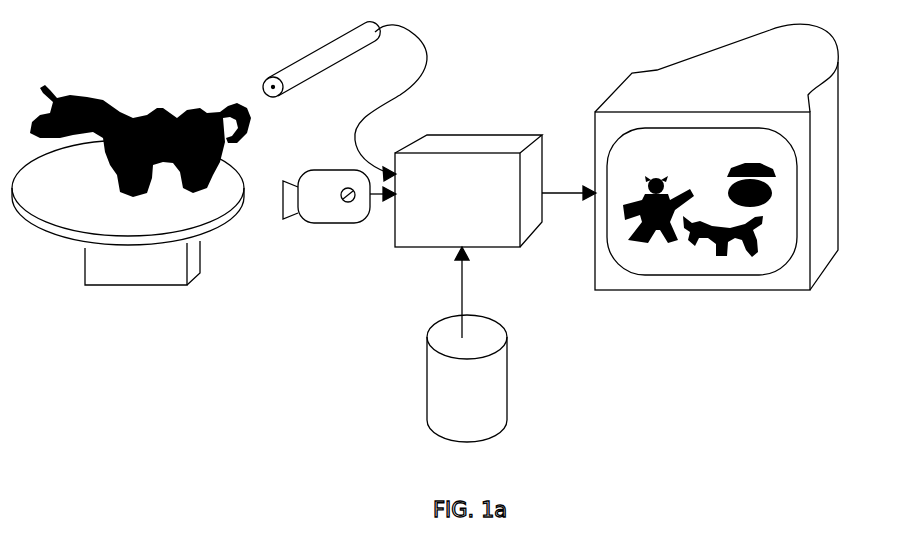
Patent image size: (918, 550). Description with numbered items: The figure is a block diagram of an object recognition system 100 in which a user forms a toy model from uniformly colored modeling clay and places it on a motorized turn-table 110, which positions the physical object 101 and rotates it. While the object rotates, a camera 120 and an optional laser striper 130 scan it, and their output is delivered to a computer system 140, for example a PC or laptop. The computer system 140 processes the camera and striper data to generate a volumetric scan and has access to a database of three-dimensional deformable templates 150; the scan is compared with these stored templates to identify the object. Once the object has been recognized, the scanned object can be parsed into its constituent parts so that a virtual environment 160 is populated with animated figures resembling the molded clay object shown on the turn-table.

The object recognition system 100 is at (358, 433).
The physical object 101 is at (146, 104).
The motorized turn-table 110 is at (62, 212).
The camera 120 is at (318, 226).
The laser striper 130 is at (303, 63).
The computer system 140 is at (442, 142).
The database of 3D deformable templates 150 is at (510, 367).
The virtual environment 160 is at (776, 220).